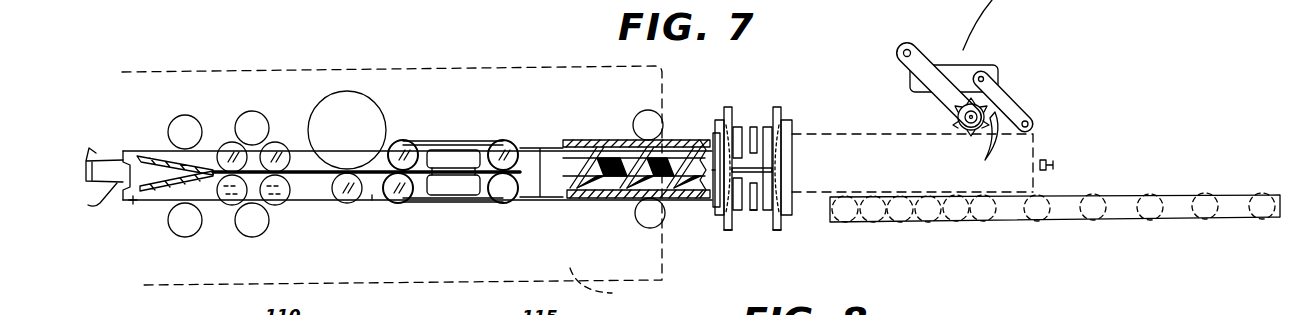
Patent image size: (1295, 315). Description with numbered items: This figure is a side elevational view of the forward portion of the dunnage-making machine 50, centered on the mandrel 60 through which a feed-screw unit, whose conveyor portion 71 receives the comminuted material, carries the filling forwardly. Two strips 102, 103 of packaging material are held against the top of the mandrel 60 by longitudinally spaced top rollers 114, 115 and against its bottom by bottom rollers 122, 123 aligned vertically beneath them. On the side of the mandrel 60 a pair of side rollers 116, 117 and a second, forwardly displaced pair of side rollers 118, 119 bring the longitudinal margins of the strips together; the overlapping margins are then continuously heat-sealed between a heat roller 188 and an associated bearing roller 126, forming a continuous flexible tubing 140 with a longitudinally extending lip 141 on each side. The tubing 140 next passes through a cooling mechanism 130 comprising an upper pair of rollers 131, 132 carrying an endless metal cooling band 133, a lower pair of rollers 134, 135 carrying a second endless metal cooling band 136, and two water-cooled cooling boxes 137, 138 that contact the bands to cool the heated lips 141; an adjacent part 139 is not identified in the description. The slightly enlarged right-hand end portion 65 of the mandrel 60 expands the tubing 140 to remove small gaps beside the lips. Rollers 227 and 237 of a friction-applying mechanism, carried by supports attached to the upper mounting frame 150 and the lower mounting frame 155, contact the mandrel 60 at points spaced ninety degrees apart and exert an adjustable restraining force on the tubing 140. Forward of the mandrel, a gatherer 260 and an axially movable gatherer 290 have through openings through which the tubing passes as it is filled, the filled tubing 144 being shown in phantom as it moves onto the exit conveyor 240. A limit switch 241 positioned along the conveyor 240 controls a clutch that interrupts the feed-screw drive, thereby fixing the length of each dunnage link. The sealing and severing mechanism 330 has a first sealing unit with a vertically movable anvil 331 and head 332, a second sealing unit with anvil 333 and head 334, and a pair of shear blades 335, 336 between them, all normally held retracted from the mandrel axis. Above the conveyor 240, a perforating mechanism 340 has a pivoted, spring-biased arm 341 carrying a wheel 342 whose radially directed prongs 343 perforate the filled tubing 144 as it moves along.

The dunnage-making machine 50 is at (1120, 103).
The mandrel 60 is at (140, 205).
The right-hand end portion of the mandrel 65 is at (640, 198).
The conveyor portion of the feed-screw unit 71 is at (96, 206).
The strip of packaging material 102 is at (153, 130).
The strip of packaging material 103 is at (158, 205).
The top roller 114 is at (172, 116).
The top roller 115 is at (248, 112).
The side roller 116 is at (222, 142).
The side roller 117 is at (228, 207).
The side roller 118 is at (280, 140).
The side roller 119 is at (280, 207).
The bottom roller 122 is at (180, 240).
The bottom roller 123 is at (255, 238).
The bearing roller 126 is at (352, 204).
The cooling mechanism 130 is at (490, 126).
The upper roller 131 is at (408, 140).
The upper roller 132 is at (528, 148).
The endless metal cooling band 133 is at (445, 141).
The lower roller 134 is at (398, 205).
The lower roller 135 is at (498, 205).
The endless metal cooling band 136 is at (462, 205).
The cooling box 137 is at (452, 150).
The cooling box 138 is at (445, 200).
The support 139 is at (372, 205).
The flexible tubing 140 is at (550, 135).
The longitudinally-extending lip 141 is at (535, 203).
The filled tubing 144 is at (836, 133).
The upper mounting frame 150 is at (664, 84).
The lower mounting frame 155 is at (609, 289).
The heat roller 188 is at (362, 105).
The second roller 227 is at (663, 120).
The second roller 237 is at (650, 228).
The exit conveyor 240 is at (1137, 218).
The limit switch 241 is at (1022, 102).
The gatherer 260 is at (718, 215).
The axially-movable gatherer 290 is at (790, 218).
The sealing and severing mechanism 330 is at (777, 53).
The anvil 331 is at (727, 231).
The head 332 is at (729, 107).
The anvil 333 is at (776, 231).
The head 334 is at (777, 107).
The shear blade 335 is at (753, 212).
The shear blade 336 is at (754, 127).
The perforating mechanism 340 is at (930, 55).
The arm 341 is at (945, 100).
The wheel 342 is at (963, 137).
The prongs 343 is at (988, 146).